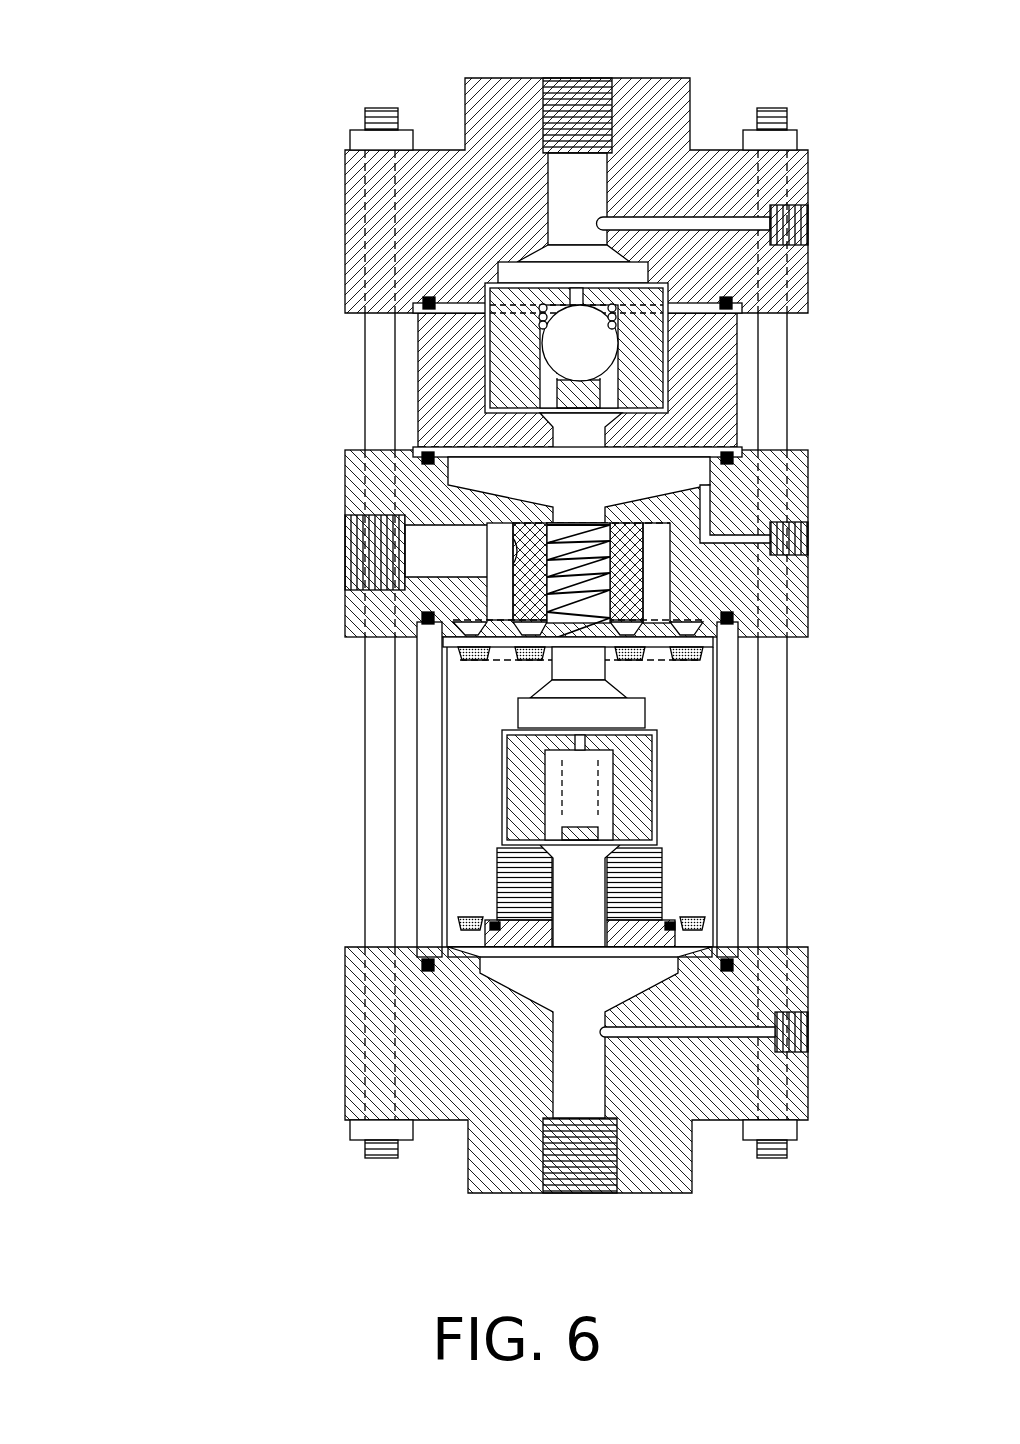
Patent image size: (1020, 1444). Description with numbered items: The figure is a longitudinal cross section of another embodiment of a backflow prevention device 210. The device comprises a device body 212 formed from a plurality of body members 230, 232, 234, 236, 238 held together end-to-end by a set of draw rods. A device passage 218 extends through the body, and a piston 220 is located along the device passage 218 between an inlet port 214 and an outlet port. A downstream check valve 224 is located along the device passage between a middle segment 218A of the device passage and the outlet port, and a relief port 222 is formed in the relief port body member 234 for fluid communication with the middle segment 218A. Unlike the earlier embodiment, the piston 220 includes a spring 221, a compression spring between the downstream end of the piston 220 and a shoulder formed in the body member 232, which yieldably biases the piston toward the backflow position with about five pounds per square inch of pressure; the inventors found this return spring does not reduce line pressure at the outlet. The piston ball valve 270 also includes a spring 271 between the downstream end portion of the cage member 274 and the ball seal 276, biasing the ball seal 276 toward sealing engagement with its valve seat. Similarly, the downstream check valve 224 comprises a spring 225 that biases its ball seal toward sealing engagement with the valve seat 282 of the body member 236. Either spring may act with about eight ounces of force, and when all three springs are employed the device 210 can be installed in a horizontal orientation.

The backflow prevention device 210 is at (140, 1232).
The device body 212 is at (812, 1138).
The inlet port 214 is at (588, 92).
The device passage 218 is at (570, 1075).
The middle segment of the device passage 218A is at (620, 417).
The piston 220 is at (707, 722).
The spring 221 is at (607, 562).
The relief port 222 is at (362, 552).
The downstream check valve 224 is at (668, 300).
The spring 225 is at (615, 298).
The body member 230 is at (350, 1063).
The body member 232 is at (427, 750).
The relief port body member 234 is at (345, 490).
The body member 236 is at (423, 367).
The body member 238 is at (345, 218).
The piston ball valve 270 is at (498, 790).
The spring 271 is at (643, 818).
The cage member 274 is at (808, 224).
The ball seal 276 is at (560, 365).
The valve seat 282 is at (675, 350).